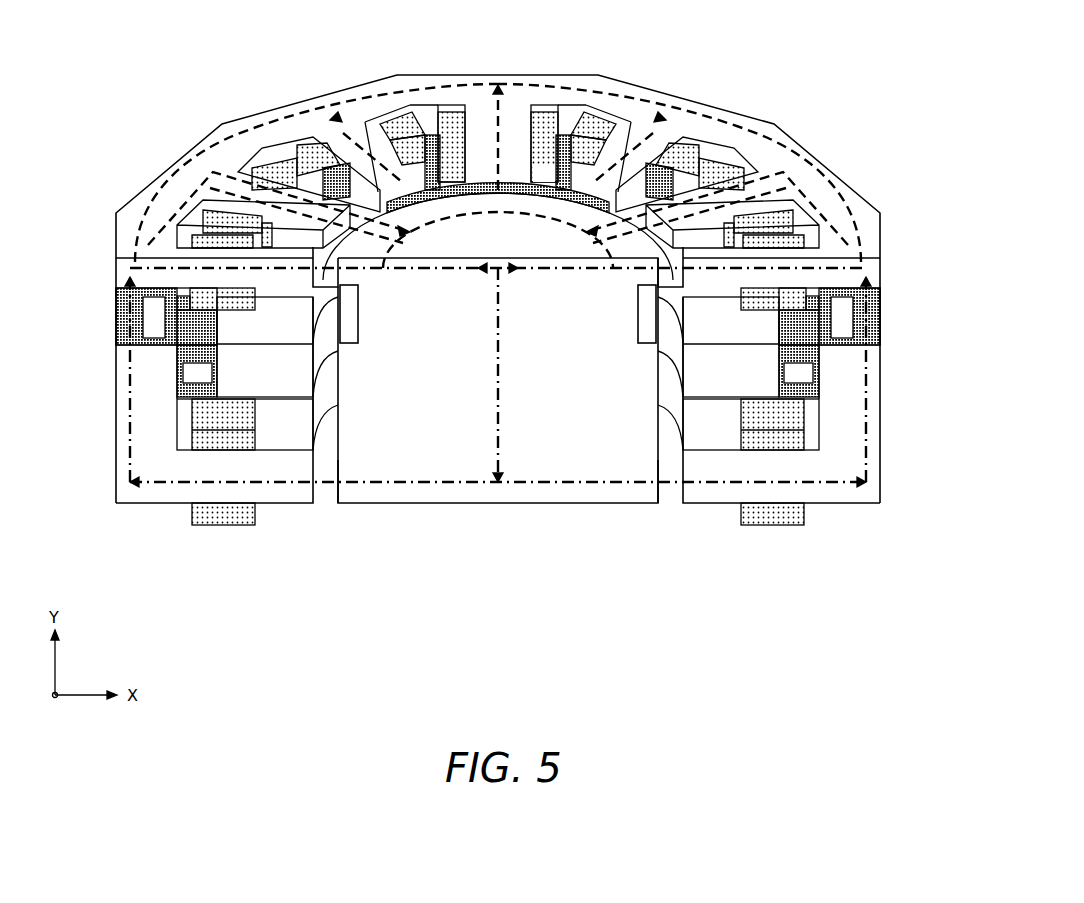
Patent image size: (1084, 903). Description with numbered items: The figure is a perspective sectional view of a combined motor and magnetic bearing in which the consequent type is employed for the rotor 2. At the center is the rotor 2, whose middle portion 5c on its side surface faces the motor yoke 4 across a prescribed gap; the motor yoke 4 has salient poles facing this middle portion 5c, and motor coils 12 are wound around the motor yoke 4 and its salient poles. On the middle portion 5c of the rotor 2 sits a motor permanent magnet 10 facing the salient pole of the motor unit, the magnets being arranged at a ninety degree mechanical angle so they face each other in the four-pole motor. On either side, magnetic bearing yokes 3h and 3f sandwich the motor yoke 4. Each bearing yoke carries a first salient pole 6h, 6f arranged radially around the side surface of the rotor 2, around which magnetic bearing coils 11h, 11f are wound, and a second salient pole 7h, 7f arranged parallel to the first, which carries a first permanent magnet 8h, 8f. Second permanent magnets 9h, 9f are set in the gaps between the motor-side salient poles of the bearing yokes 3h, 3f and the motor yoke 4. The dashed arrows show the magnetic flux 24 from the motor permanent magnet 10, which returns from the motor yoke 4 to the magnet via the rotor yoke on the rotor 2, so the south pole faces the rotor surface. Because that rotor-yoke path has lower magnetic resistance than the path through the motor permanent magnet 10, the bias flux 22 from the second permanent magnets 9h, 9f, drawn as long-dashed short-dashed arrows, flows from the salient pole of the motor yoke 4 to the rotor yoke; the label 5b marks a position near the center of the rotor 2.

The rotor 2 is at (498, 505).
The magnetic bearing yoke 3h is at (136, 505).
The magnetic bearing yoke 3f is at (860, 505).
The motor yoke 4 is at (850, 184).
The flux value 5b is at (482, 375).
The middle portion 5c is at (489, 283).
The first salient pole 6h is at (300, 505).
The first salient pole 6f is at (696, 505).
The second salient pole 7h is at (277, 373).
The second salient pole 7f is at (719, 373).
The first permanent magnet 8h is at (177, 358).
The first permanent magnet 8f is at (820, 378).
The second permanent magnet 9h is at (116, 312).
The second permanent magnet 9f is at (880, 312).
The motor permanent magnet 10 is at (483, 185).
The magnetic bearing coil 11h is at (225, 526).
The magnetic bearing coil 11f is at (771, 526).
The motor coil 12 is at (542, 112).
The bias flux 22 is at (130, 440).
The magnetic flux 24 is at (297, 128).